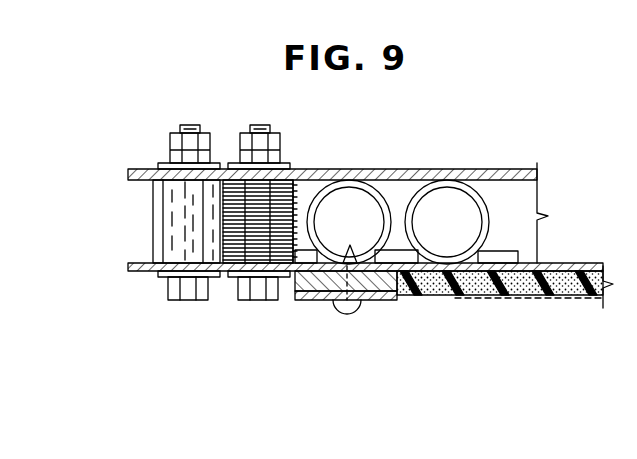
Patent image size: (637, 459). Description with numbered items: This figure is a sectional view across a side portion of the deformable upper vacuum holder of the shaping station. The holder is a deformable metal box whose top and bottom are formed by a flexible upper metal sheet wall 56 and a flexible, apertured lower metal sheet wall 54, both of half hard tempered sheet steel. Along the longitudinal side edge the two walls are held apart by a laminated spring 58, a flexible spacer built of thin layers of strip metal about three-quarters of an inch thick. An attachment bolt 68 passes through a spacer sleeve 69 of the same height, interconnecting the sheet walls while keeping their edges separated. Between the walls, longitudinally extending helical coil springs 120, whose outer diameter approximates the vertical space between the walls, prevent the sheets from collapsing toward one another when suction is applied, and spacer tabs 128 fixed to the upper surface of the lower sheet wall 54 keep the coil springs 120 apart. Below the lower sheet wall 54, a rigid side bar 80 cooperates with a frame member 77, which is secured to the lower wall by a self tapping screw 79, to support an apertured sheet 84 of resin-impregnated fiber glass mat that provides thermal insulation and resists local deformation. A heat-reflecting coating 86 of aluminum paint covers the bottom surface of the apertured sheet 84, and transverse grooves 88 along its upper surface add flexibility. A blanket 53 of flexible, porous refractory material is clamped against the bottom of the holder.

The blanket 53 is at (601, 300).
The lower metal sheet wall 54 is at (538, 266).
The upper metal sheet wall 56 is at (492, 171).
The laminated spring 58 is at (302, 188).
The attachment bolt 68 is at (190, 300).
The spacer sleeve 69 is at (161, 207).
The frame member 77 is at (295, 284).
The self tapping screw 79 is at (356, 312).
The rigid side bar 80 is at (322, 302).
The apertured sheet 84 is at (530, 298).
The heat-reflecting coating 86 is at (492, 298).
The transverse groove 88 is at (571, 300).
The helical coil spring 120 is at (420, 170).
The spacer tab 128 is at (502, 250).